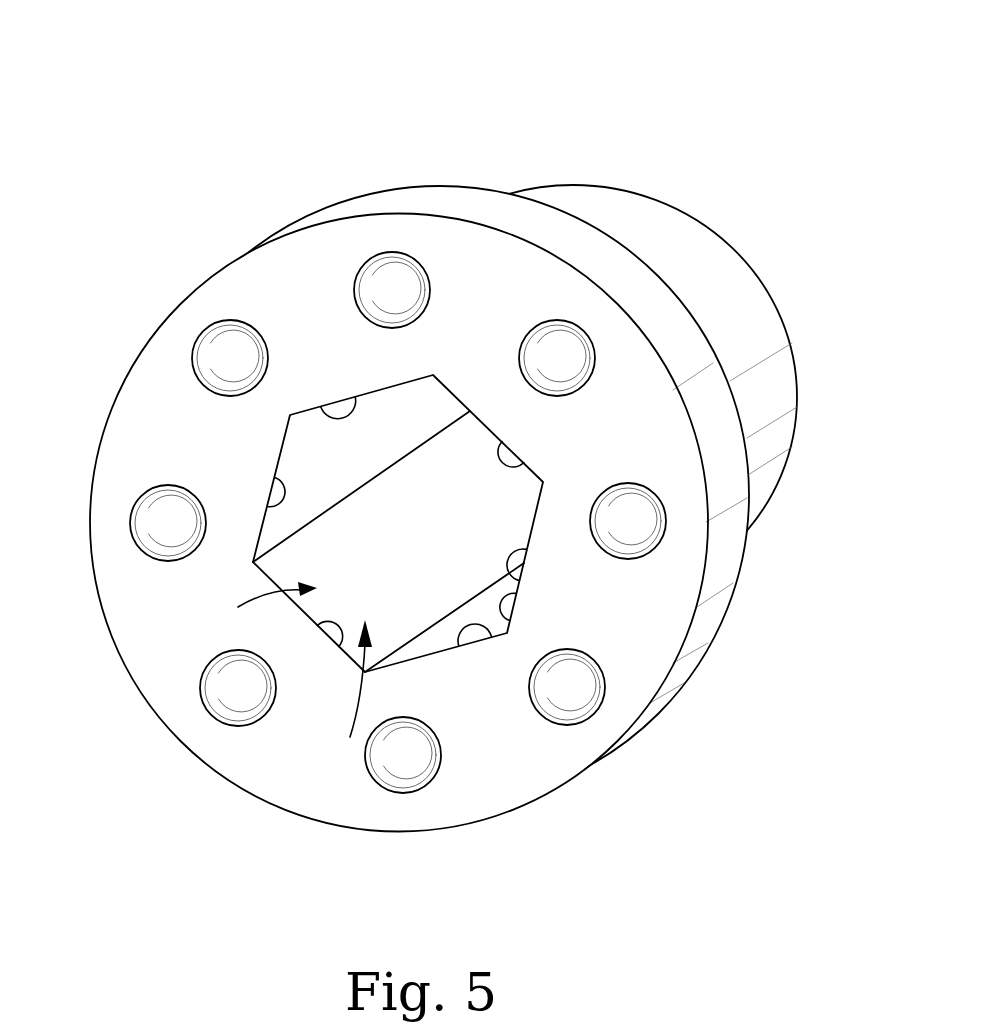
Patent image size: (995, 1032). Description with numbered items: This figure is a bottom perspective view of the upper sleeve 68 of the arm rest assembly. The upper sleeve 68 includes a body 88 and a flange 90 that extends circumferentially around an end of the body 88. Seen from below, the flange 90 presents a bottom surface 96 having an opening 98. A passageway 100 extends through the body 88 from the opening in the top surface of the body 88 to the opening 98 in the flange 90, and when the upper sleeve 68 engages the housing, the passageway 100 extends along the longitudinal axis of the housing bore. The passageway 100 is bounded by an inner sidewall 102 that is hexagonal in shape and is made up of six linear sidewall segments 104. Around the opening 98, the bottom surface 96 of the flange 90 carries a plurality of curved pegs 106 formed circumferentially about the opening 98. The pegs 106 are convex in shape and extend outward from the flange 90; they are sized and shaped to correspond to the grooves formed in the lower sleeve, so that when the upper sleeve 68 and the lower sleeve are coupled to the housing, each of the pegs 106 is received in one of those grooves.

The upper sleeve 68 is at (138, 101).
The body 88 is at (648, 212).
The flange 90 is at (147, 378).
The bottom surface 96 is at (112, 453).
The opening 98 is at (262, 605).
The passageway 100 is at (344, 696).
The inner sidewall 102 is at (512, 622).
The linear sidewall segments 104 is at (358, 402).
The curved pegs 106 is at (390, 283).